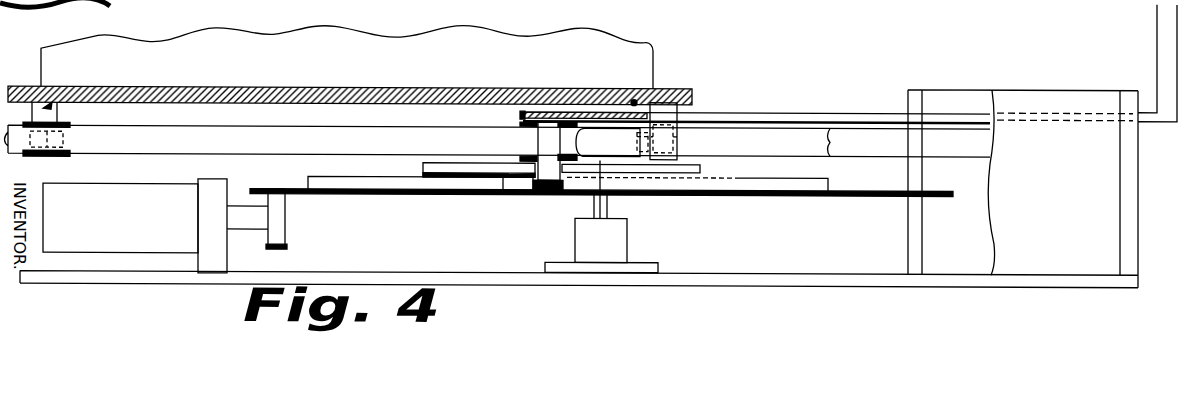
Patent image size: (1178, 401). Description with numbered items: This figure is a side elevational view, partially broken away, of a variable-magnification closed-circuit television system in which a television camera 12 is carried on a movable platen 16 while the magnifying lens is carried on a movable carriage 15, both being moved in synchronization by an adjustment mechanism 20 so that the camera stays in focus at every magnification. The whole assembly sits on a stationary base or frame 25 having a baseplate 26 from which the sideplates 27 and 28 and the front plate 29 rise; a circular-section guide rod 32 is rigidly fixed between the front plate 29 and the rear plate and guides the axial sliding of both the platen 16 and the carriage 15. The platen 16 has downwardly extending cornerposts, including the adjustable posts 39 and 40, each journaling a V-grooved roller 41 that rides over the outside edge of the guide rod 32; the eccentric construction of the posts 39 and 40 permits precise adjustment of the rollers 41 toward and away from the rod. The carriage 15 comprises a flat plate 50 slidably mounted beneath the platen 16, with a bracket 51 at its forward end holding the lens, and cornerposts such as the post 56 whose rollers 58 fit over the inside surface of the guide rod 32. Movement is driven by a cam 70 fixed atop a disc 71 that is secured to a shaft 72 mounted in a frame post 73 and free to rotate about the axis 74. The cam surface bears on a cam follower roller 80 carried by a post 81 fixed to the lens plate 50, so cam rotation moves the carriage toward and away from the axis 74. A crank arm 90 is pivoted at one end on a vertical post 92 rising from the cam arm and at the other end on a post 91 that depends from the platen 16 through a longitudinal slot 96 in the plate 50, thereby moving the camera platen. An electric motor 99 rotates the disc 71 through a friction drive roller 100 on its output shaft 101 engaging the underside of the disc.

The television camera 12 is at (347, 56).
The movable carriage 15 is at (1165, 122).
The movable platen 16 is at (449, 87).
The adjustment mechanism 20 is at (345, 166).
The stationary base or frame 25 is at (683, 280).
The baseplate 26 is at (874, 283).
The sideplate 27 is at (1063, 189).
The sideplate 28 is at (952, 93).
The front plate 29 is at (1135, 229).
The guide rod 32 is at (162, 142).
The adjustable post 39 is at (66, 86).
The adjustable post 40 is at (636, 99).
The roller 41 is at (38, 155).
The flat plate 50 is at (753, 114).
The bracket 51 is at (1157, 31).
The cornerpost 56 is at (580, 120).
The roller 58 is at (608, 141).
The cam 70 is at (381, 185).
The disc 71 is at (400, 194).
The shaft 72 is at (600, 217).
The frame post 73 is at (583, 262).
The axis 74 is at (598, 181).
The cam follower roller 80 is at (533, 152).
The post 81 is at (527, 122).
The crank arm 90 is at (447, 161).
The post 91 is at (668, 100).
The vertical post 92 is at (441, 177).
The longitudinal slot 96 is at (832, 115).
The electric motor 99 is at (135, 225).
The friction drive roller 100 is at (283, 247).
The output shaft 101 is at (246, 228).